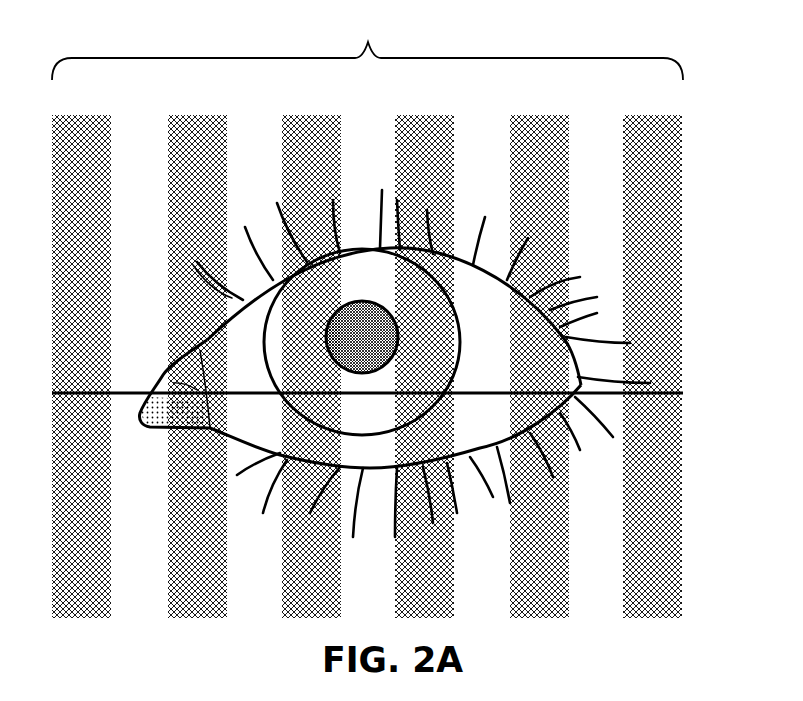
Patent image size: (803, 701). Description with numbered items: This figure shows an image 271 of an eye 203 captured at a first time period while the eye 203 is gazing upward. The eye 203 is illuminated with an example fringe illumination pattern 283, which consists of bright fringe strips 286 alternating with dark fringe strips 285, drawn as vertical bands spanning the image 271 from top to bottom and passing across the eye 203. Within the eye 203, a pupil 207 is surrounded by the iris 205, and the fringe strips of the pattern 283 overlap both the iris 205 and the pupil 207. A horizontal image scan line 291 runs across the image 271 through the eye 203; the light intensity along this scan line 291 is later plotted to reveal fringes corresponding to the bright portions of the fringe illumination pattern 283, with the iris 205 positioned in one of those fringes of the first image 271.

The image 271 is at (790, 86).
The fringe illumination pattern 283 is at (367, 48).
The dark fringe strips 285 is at (96, 127).
The bright fringe strips 286 is at (142, 127).
The eye 203 is at (465, 230).
The iris 205 is at (458, 345).
The pupil 207 is at (345, 302).
The image scan line 291 is at (683, 393).